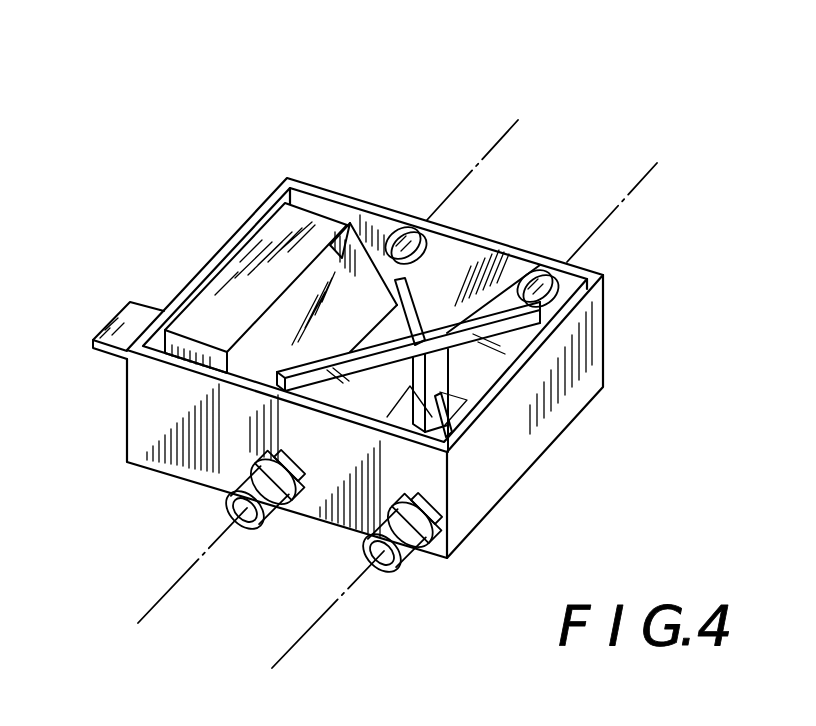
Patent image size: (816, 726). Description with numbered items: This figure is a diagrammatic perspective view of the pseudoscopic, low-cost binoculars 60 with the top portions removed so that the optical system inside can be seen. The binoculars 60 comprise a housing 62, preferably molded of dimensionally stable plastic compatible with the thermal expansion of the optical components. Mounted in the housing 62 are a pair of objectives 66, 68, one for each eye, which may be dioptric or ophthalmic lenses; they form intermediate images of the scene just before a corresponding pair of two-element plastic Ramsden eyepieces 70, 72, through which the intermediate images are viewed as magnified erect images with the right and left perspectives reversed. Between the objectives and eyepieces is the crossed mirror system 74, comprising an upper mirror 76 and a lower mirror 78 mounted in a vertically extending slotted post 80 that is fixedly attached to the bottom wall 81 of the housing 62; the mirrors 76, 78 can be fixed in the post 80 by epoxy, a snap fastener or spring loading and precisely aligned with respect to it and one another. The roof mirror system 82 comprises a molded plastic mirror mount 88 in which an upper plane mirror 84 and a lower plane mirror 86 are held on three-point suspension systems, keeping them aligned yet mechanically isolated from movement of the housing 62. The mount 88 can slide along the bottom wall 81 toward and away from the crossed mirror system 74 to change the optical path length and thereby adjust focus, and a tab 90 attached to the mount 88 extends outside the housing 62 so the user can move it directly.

The binoculars 60 is at (465, 138).
The housing 62 is at (242, 226).
The objective 66 is at (409, 231).
The objective 68 is at (533, 277).
The Ramsden eyepiece 70 is at (248, 537).
The Ramsden eyepiece 72 is at (415, 566).
The crossed mirror system 74 is at (470, 378).
The upper mirror 76 is at (548, 322).
The lower mirror 78 is at (452, 456).
The slotted post 80 is at (383, 360).
The bottom wall 81 is at (357, 408).
The roof mirror system 82 is at (223, 265).
The upper plane mirror 84 is at (337, 257).
The lower plane mirror 86 is at (366, 222).
The mirror mount 88 is at (170, 357).
The tab 90 is at (123, 334).